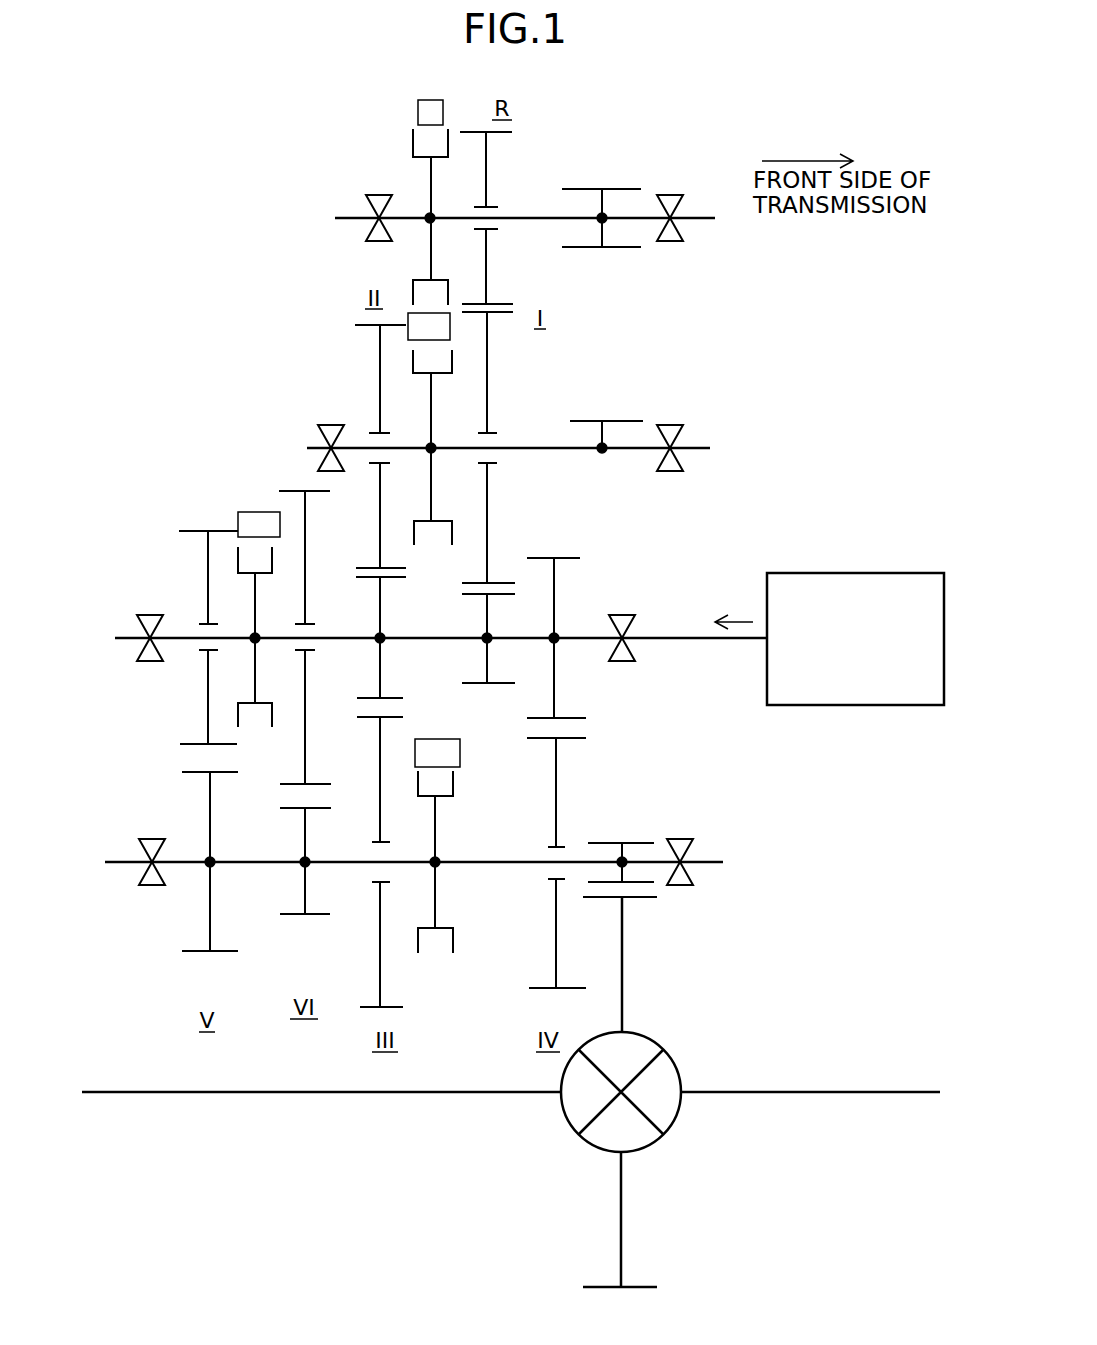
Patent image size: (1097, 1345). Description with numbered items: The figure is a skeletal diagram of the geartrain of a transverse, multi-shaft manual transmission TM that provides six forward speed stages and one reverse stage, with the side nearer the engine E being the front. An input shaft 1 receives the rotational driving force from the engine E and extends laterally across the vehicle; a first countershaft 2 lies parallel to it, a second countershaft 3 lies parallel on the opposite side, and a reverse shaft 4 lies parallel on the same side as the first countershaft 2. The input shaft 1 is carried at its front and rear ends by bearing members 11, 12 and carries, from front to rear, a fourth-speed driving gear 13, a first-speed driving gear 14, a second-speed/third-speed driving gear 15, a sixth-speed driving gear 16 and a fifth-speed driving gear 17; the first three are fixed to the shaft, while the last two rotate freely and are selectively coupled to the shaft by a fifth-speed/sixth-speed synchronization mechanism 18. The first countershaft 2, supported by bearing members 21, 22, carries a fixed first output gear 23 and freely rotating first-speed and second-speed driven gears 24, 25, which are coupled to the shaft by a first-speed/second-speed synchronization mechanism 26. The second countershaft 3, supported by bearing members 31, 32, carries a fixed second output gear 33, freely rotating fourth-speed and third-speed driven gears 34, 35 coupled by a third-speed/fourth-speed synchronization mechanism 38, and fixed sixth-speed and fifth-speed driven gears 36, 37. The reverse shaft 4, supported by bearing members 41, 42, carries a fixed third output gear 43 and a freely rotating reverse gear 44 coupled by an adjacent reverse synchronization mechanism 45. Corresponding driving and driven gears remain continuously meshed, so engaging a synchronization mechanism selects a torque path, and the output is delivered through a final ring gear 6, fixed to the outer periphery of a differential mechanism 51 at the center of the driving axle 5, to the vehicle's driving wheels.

The input shaft 1 is at (667, 638).
The first countershaft 2 is at (693, 447).
The second countershaft 3 is at (712, 862).
The reverse shaft 4 is at (702, 213).
The driving axle 5 is at (800, 1092).
The final ring gear 6 is at (622, 975).
The bearing member 11 is at (624, 612).
The bearing member 12 is at (150, 613).
The fourth-speed driving gear 13 is at (560, 558).
The first-speed driving gear 14 is at (488, 657).
The second-speed/third-speed driving gear 15 is at (383, 607).
The sixth-speed driving gear 16 is at (307, 555).
The fifth-speed driving gear 17 is at (207, 577).
The fifth-speed/sixth-speed synchronization mechanism 18 is at (255, 663).
The bearing member 21 is at (672, 427).
The bearing member 22 is at (332, 427).
The first output gear 23 is at (590, 420).
The first-speed driven gear 24 is at (488, 372).
The second-speed driven gear 25 is at (378, 378).
The first-speed/second-speed synchronization mechanism 26 is at (433, 417).
The bearing member 31 is at (685, 842).
The bearing member 32 is at (148, 840).
The second output gear 33 is at (612, 843).
The fourth-speed driven gear 34 is at (558, 775).
The third-speed driven gear 35 is at (382, 743).
The sixth-speed driven gear 36 is at (307, 838).
The fifth-speed driven gear 37 is at (211, 827).
The third-speed/fourth-speed synchronization mechanism 38 is at (435, 830).
The bearing member 41 is at (667, 193).
The bearing member 42 is at (377, 193).
The third output gear 43 is at (624, 188).
The reverse gear 44 is at (486, 169).
The reverse synchronization mechanism 45 is at (430, 177).
The differential mechanism 51 is at (662, 1055).
The engine E is at (792, 573).
The transmission TM is at (259, 371).